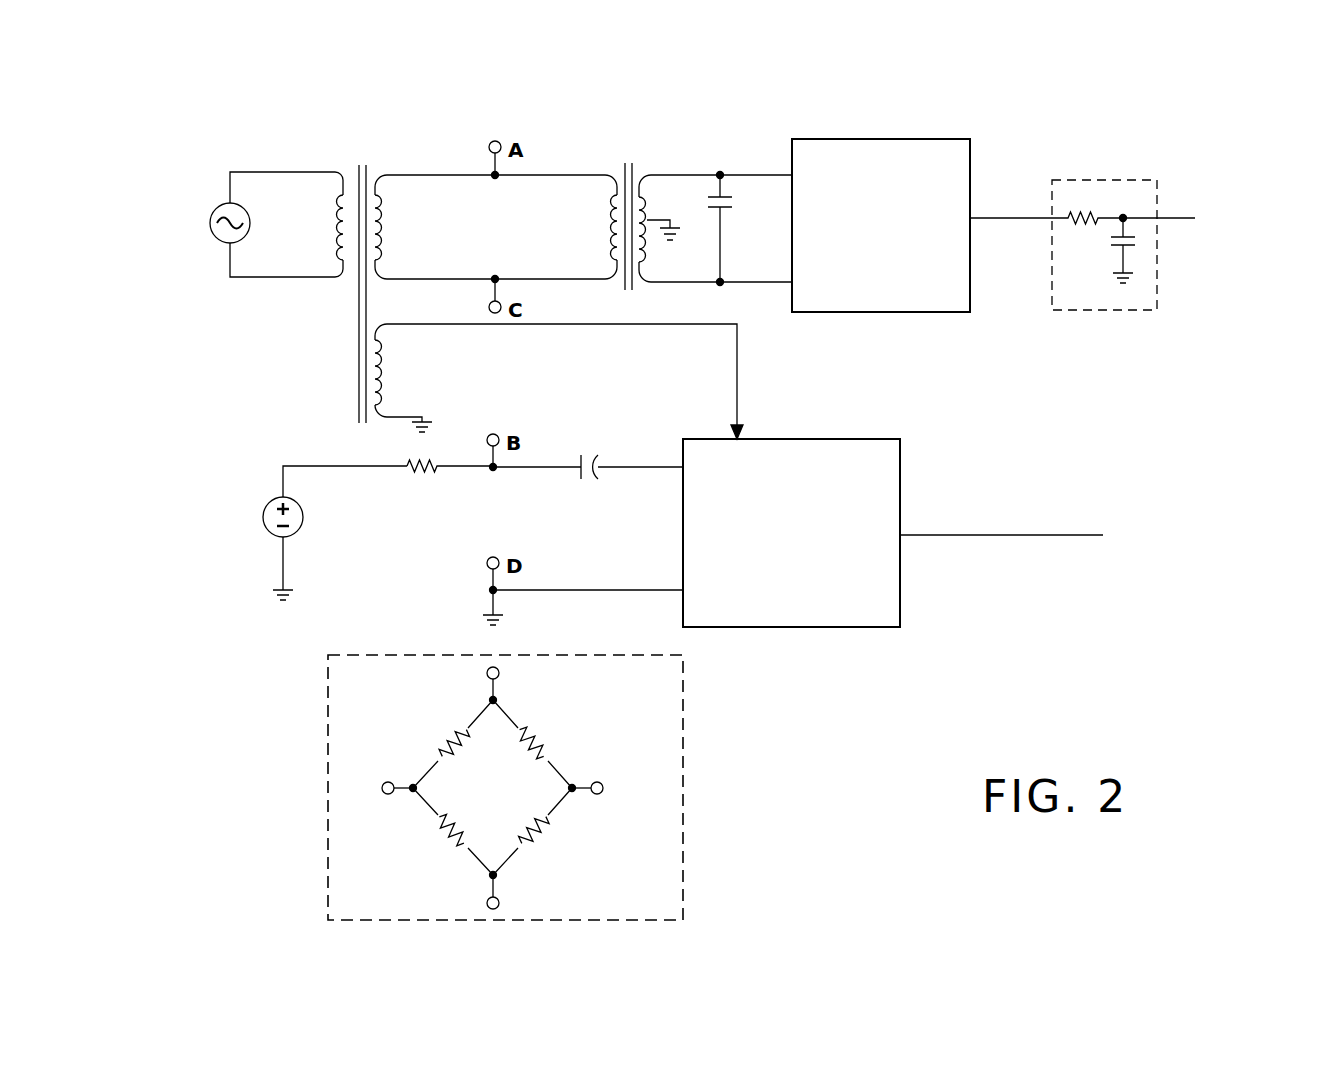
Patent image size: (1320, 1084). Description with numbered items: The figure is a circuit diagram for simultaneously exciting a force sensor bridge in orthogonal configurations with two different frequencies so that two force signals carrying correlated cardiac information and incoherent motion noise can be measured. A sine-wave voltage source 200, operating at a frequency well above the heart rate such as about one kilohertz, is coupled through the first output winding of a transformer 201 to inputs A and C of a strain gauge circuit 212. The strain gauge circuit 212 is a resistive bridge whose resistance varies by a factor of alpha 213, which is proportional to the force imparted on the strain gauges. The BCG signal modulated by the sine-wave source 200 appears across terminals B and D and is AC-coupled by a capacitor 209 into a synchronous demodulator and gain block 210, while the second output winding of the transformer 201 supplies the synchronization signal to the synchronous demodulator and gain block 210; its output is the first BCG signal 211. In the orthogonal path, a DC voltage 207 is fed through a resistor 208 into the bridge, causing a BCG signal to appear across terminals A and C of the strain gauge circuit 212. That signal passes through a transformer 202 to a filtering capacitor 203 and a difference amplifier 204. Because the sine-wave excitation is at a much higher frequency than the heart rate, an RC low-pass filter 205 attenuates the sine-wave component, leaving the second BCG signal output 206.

The sine-wave voltage source 200 is at (210, 200).
The transformer 201 is at (340, 165).
The transformer 202 is at (651, 167).
The filtering capacitor 203 is at (727, 183).
The difference amplifier 204 is at (973, 178).
The RC low-pass filter 205 is at (1115, 314).
The second BCG signal output 206 is at (1222, 200).
The DC voltage 207 is at (250, 548).
The resistor R1 208 is at (418, 525).
The capacitor 209 is at (592, 447).
The synchronous demodulator and gain block 210 is at (880, 436).
The first BCG signal 211 is at (1130, 515).
The strain gauge circuit 212 is at (556, 771).
The alpha 213 is at (415, 695).